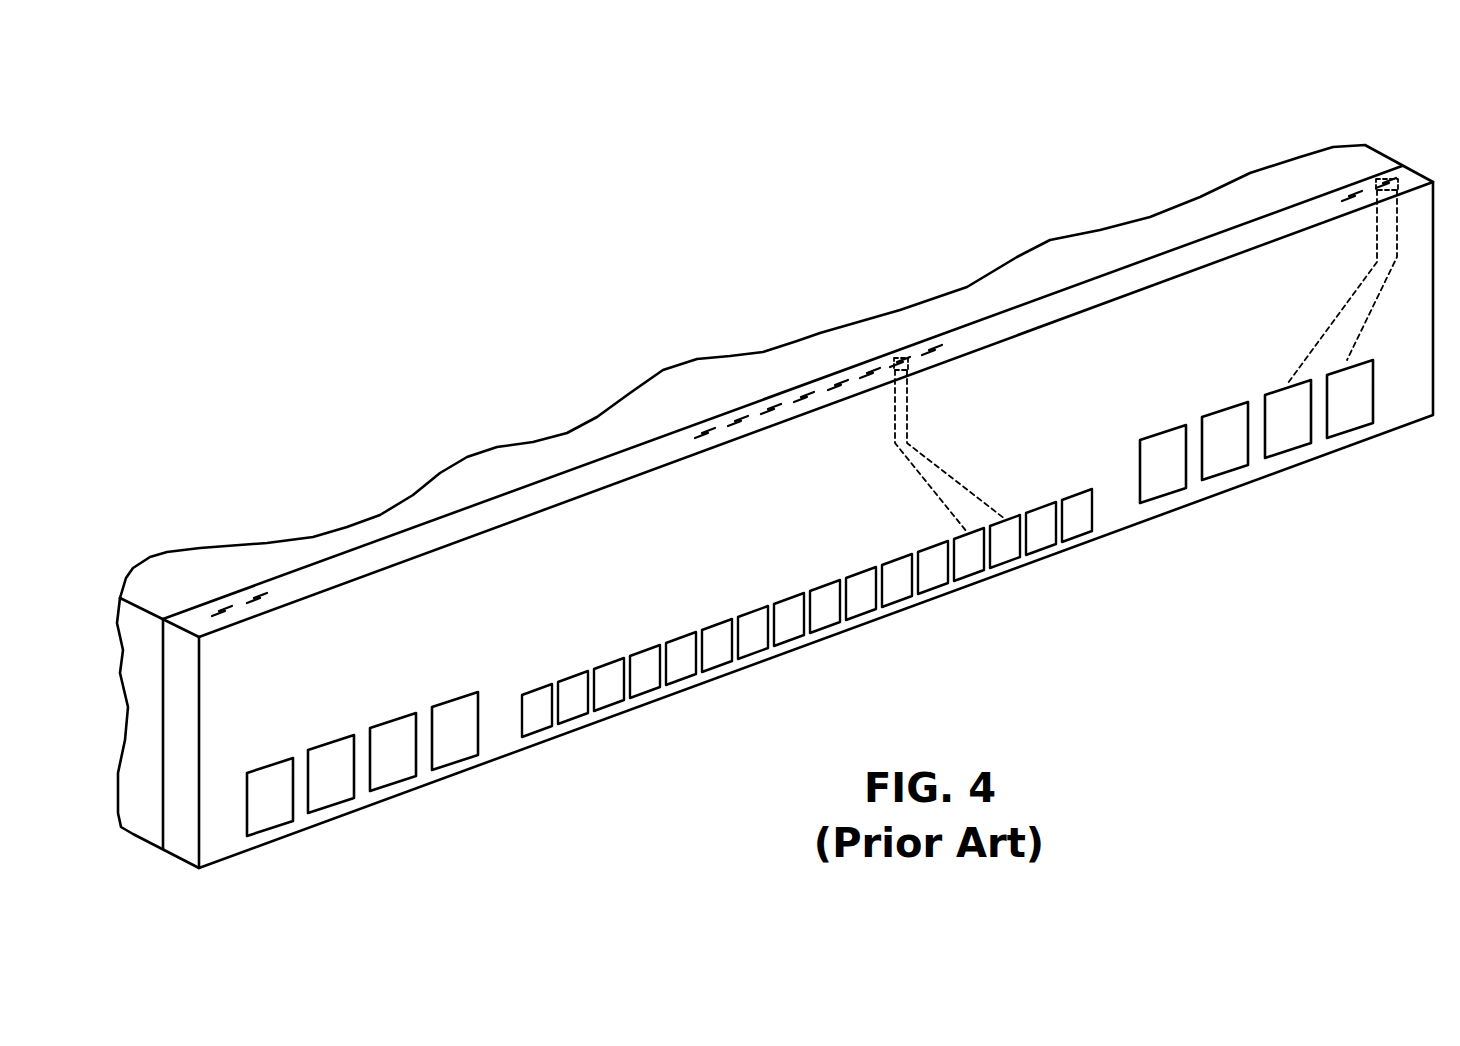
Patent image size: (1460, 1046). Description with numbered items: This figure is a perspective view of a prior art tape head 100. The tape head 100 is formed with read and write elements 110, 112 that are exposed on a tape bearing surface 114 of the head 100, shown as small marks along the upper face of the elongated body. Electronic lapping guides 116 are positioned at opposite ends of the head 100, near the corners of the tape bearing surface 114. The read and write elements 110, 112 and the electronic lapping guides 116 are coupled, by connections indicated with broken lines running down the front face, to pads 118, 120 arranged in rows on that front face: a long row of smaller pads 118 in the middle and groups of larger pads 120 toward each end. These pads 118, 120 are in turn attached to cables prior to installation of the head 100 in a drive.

The tape head 100 is at (499, 314).
The read element 110 is at (899, 360).
The write element 112 is at (940, 352).
The tape bearing surface 114 is at (1170, 267).
The electronic lapping guide 116 is at (1385, 180).
The pad 118 is at (932, 587).
The pad 120 is at (1222, 472).